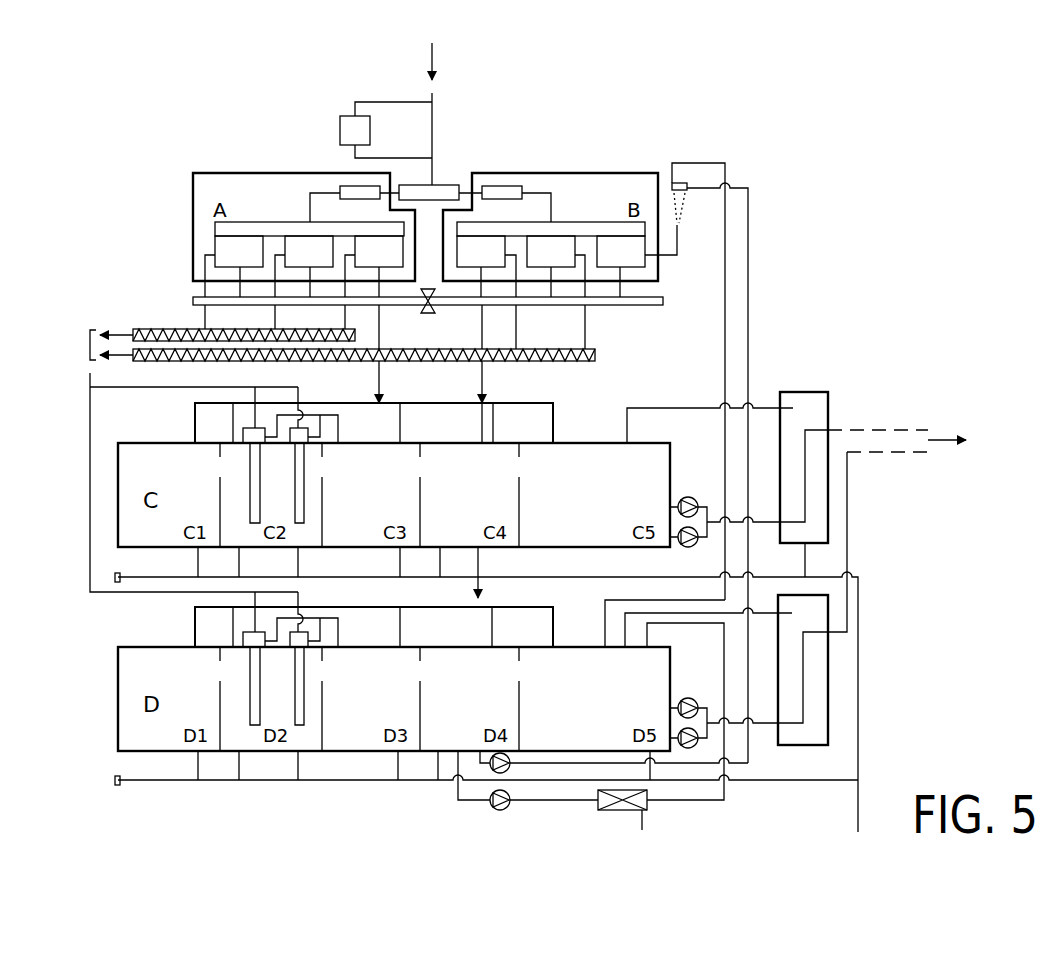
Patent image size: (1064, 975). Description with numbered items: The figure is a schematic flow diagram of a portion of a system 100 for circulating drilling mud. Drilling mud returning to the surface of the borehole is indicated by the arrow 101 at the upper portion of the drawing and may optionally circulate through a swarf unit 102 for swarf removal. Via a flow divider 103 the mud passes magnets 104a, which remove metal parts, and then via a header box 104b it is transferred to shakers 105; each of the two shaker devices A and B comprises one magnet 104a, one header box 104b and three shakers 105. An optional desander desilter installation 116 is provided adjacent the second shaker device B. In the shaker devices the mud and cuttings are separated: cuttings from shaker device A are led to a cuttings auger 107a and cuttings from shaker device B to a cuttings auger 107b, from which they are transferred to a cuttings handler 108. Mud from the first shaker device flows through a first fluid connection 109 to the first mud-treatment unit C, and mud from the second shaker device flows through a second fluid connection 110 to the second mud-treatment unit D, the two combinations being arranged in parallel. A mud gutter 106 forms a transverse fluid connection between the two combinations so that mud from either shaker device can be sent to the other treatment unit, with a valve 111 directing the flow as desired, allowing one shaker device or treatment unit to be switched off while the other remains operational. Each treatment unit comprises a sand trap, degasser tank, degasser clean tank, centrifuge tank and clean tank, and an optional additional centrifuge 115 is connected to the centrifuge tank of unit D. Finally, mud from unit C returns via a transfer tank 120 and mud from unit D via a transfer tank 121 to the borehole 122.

The system for circulating drilling mud 100 is at (138, 110).
The arrow indicating drilling mud returning to the surface 101 is at (430, 56).
The swarf unit 102 is at (340, 131).
The flow divider 103 is at (437, 185).
The magnet 104a is at (350, 186).
The header box 104b is at (218, 228).
The shaker 105 is at (255, 263).
The mud gutter 106 is at (660, 305).
The cuttings auger 107a is at (184, 328).
The cuttings auger 107b is at (596, 357).
The cuttings handler 108 is at (90, 346).
The first fluid connection 109 is at (375, 390).
The second fluid connection 110 is at (487, 390).
The valve 111 is at (425, 308).
The additional centrifuge 115 is at (600, 808).
The desander desilter installation 116 is at (684, 215).
The transfer tank 120 is at (806, 392).
The transfer tank 121 is at (829, 677).
The borehole 122 is at (935, 440).